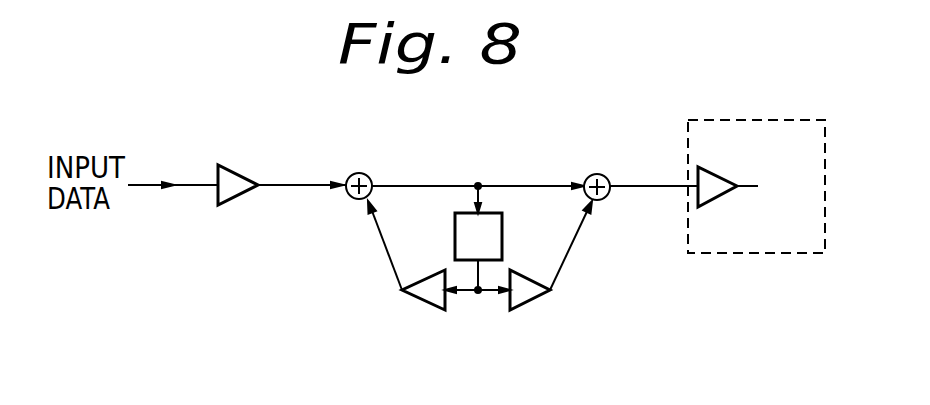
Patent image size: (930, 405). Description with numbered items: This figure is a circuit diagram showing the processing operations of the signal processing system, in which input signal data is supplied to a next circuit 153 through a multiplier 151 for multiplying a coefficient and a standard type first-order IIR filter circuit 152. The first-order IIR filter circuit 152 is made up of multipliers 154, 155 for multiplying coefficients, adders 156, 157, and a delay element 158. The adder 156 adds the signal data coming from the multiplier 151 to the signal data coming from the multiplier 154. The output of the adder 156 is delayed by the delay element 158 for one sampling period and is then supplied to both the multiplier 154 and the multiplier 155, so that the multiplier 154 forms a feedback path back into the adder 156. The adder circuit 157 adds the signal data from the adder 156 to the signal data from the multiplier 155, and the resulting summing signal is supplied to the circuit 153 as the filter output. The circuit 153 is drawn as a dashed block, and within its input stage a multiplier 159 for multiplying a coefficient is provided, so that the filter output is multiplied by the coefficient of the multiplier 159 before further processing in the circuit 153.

The multiplier 151 is at (253, 173).
The first-order IIR filter circuit 152 is at (441, 265).
The next circuit 153 is at (756, 220).
The multiplier 154 is at (433, 275).
The multiplier 155 is at (527, 302).
The adder 156 is at (370, 175).
The adder circuit 157 is at (605, 175).
The delay element 158 is at (502, 240).
The multiplier 159 is at (727, 178).